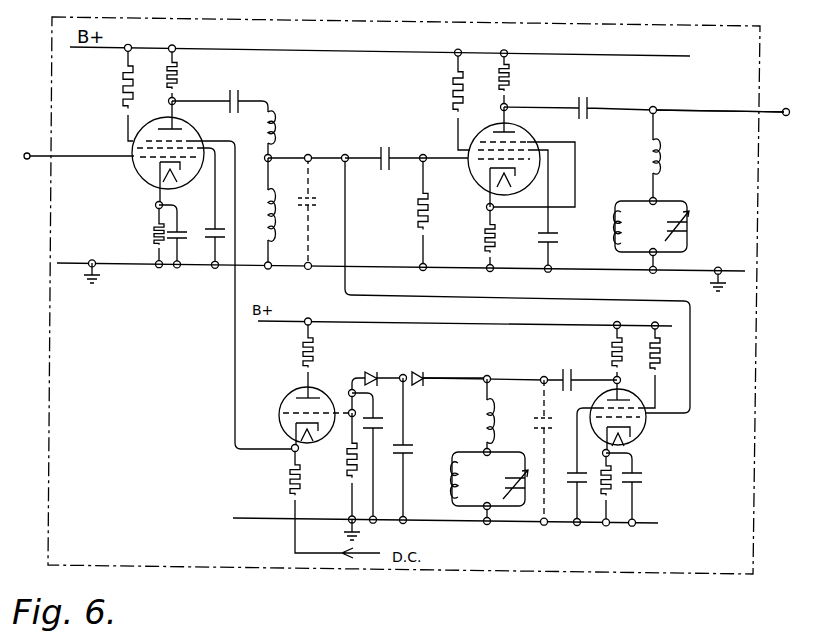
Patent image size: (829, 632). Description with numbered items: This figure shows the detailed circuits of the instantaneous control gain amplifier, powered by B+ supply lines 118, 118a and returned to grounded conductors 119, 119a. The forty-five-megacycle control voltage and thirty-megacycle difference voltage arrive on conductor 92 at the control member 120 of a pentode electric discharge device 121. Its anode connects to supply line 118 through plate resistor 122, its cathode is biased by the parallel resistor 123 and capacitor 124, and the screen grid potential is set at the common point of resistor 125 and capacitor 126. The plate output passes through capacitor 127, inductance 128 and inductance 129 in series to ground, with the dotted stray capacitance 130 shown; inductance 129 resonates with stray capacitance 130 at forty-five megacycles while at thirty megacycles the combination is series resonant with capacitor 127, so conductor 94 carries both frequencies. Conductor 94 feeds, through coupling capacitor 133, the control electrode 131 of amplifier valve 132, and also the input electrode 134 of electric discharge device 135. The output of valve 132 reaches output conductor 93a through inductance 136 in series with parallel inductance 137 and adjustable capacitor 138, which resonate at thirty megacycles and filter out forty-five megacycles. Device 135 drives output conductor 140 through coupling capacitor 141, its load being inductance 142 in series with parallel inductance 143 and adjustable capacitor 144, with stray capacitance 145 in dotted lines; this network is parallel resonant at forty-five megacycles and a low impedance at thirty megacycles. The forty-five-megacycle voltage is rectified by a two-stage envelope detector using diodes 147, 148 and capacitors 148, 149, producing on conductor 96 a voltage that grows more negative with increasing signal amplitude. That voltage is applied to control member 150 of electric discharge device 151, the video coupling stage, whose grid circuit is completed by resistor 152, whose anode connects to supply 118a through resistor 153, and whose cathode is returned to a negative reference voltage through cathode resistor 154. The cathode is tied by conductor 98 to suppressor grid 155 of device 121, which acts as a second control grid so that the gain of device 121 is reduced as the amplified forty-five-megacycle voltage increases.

The conductor 92 is at (37, 157).
The output conductor 93a is at (720, 109).
The conductor 94 is at (326, 157).
The conductor 96 is at (350, 392).
The conductor 98 is at (238, 284).
The B+ supply voltage line 118 is at (305, 50).
The B+ supply voltage line 118a is at (502, 325).
The grounded conductor 119 is at (121, 269).
The grounded conductor 119a is at (243, 520).
The control member 120 is at (155, 158).
The electric discharge device 121 is at (187, 184).
The plate resistor 122 is at (176, 74).
The resistor 123 is at (150, 236).
The capacitor 124 is at (178, 239).
The resistor 125 is at (122, 101).
The capacitor 126 is at (219, 246).
The capacitor 127 is at (239, 94).
The inductance 128 is at (279, 121).
The inductance 129 is at (277, 191).
The stray capacitance 130 is at (305, 199).
The control electrode 131 is at (487, 163).
The amplifier valve 132 is at (528, 133).
The coupling capacitor 133 is at (385, 146).
The input electrode 134 is at (629, 418).
The electric discharge device 135 is at (634, 443).
The inductance 136 is at (658, 156).
The inductance 137 is at (631, 226).
The adjustable capacitor 138 is at (692, 227).
The output conductor 140 is at (462, 375).
The coupling capacitor 141 is at (567, 368).
The inductance 142 is at (497, 400).
The inductance 143 is at (465, 471).
The adjustable capacitor 144 is at (509, 488).
The stray capacitance 145 is at (545, 432).
The diode 147 is at (418, 370).
The diode and capacitor 148 is at (377, 370).
The capacitor 149 is at (377, 417).
The control member 150 is at (288, 418).
The electric discharge device 151 is at (314, 446).
The resistor 152 is at (348, 490).
The resistor 153 is at (297, 351).
The cathode resistor 154 is at (287, 484).
The suppressor grid 155 is at (186, 135).